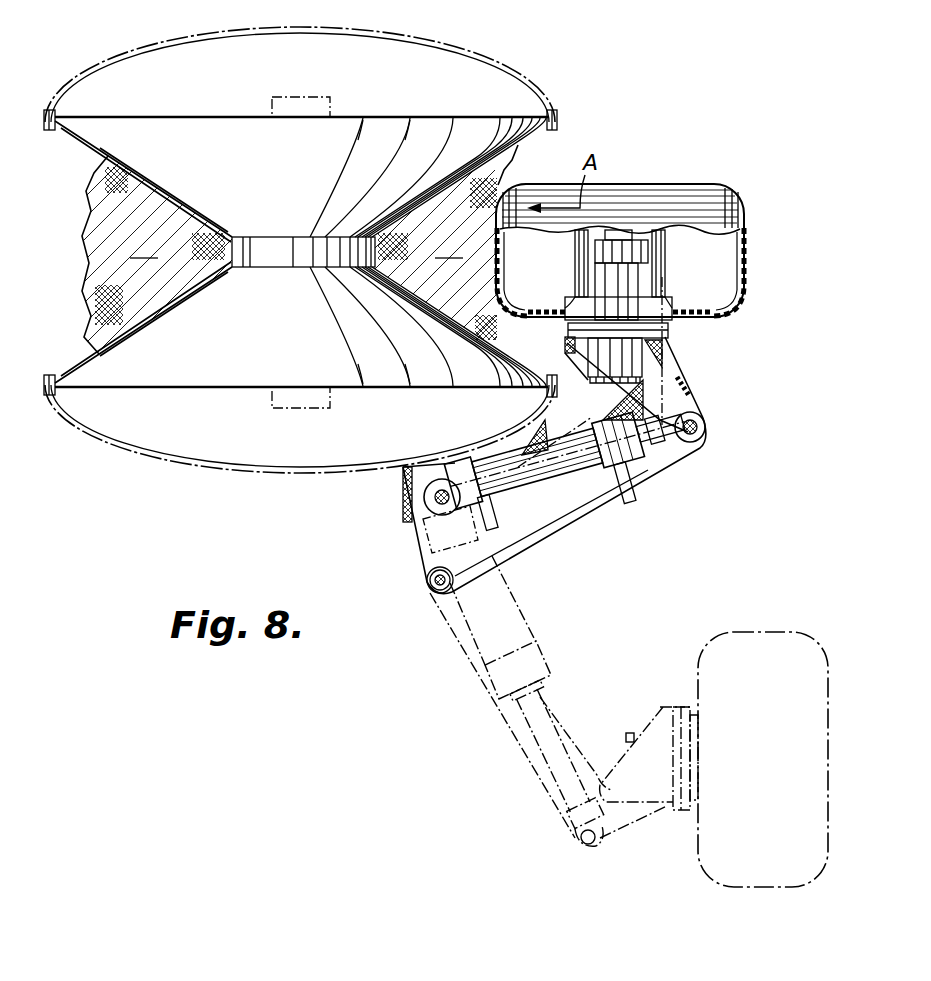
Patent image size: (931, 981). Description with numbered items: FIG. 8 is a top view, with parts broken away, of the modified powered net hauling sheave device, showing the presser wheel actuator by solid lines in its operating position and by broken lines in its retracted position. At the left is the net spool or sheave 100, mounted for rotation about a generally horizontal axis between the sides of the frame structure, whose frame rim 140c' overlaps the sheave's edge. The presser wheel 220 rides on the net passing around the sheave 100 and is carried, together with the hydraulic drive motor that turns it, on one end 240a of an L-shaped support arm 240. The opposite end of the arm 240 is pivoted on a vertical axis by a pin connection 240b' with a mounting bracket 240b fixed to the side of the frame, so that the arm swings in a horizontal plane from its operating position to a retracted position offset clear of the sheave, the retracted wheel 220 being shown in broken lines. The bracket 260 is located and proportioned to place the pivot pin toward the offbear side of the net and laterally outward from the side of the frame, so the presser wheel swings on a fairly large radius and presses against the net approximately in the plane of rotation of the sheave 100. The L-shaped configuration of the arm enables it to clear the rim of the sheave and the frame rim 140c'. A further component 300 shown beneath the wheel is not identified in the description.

The sheave 100 is at (548, 150).
The frame rim 140c' is at (348, 262).
The presser wheel 220 is at (755, 214).
The motor 300 is at (645, 366).
The L-shaped support arm 240 is at (685, 458).
The end of support arm 240a is at (672, 386).
The mounting bracket 240b is at (408, 606).
The pin connection 240b' is at (377, 508).
The bracket 260 is at (543, 485).